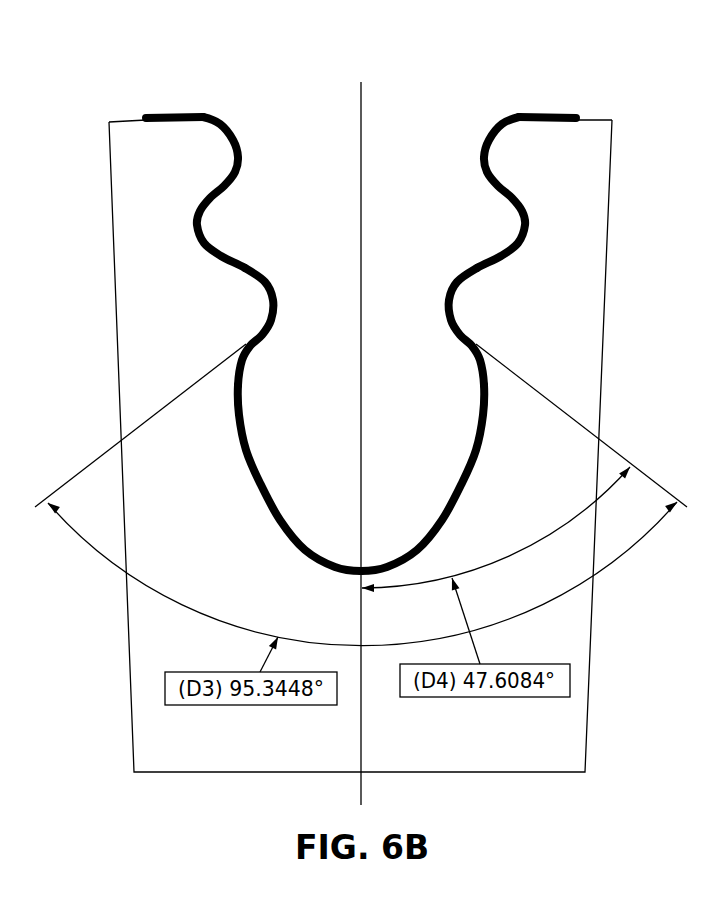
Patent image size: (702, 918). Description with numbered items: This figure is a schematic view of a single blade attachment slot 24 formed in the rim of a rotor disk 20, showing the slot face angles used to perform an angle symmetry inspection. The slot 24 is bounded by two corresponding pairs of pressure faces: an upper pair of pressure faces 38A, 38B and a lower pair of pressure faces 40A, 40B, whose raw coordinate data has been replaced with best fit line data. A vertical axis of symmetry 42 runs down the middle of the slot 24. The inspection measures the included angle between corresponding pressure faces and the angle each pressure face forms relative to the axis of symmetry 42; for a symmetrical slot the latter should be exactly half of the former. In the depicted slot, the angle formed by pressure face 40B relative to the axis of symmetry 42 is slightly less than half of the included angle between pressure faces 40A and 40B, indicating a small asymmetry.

The rotor disk 20 is at (583, 344).
The blade attachment slot 24 is at (460, 88).
The pressure face 38A is at (226, 190).
The pressure face 38B is at (499, 190).
The pressure face 40A is at (259, 338).
The pressure face 40B is at (463, 342).
The axis of symmetry 42 is at (361, 99).